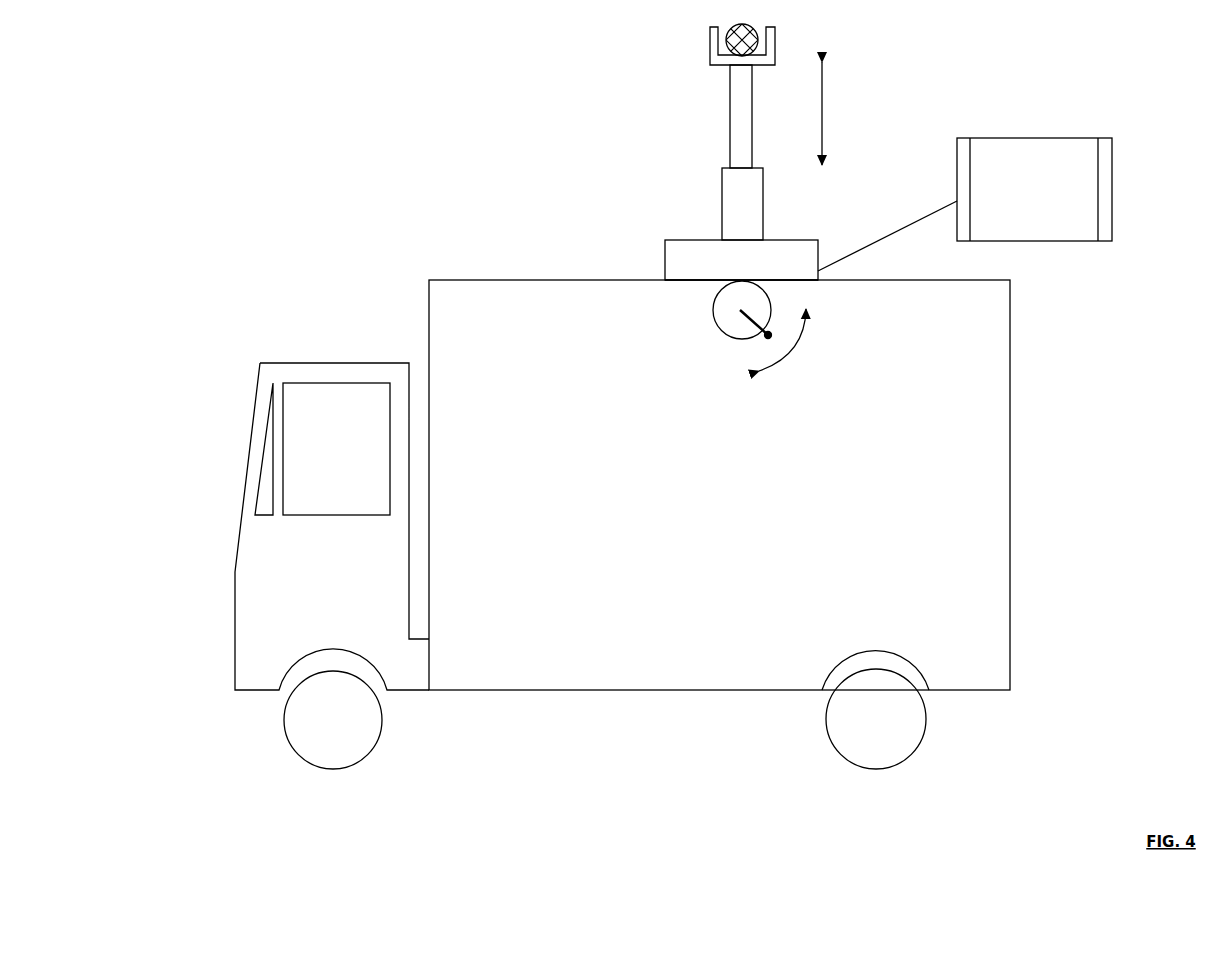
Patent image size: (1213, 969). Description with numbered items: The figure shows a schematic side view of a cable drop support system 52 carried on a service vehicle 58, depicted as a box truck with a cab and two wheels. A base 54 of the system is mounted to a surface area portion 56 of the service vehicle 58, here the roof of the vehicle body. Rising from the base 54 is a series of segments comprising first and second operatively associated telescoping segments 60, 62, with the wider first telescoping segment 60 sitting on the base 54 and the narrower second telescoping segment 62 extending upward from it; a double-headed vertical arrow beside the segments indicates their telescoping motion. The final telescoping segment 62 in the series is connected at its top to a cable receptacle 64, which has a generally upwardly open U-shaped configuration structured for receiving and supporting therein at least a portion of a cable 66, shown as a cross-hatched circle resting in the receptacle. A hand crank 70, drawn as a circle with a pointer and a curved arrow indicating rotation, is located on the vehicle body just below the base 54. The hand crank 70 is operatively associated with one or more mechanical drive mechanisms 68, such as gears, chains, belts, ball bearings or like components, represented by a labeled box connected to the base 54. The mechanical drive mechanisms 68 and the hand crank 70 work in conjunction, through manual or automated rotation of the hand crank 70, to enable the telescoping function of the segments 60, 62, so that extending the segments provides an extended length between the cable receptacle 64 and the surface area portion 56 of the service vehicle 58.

The cable drop support system 52 is at (493, 103).
The base 54 is at (665, 262).
The surface area portion 56 is at (690, 282).
The service vehicle 58 is at (353, 263).
The first telescoping segment 60 is at (722, 203).
The second telescoping segment 62 is at (730, 118).
The cable receptacle 64 is at (710, 48).
The cable 66 is at (760, 40).
The mechanical drive mechanisms 68 is at (1058, 138).
The hand crank 70 is at (728, 340).